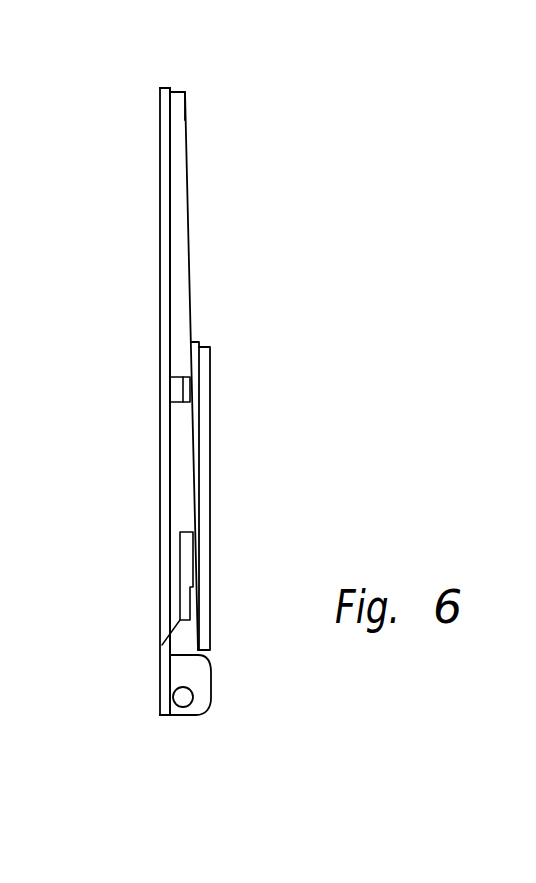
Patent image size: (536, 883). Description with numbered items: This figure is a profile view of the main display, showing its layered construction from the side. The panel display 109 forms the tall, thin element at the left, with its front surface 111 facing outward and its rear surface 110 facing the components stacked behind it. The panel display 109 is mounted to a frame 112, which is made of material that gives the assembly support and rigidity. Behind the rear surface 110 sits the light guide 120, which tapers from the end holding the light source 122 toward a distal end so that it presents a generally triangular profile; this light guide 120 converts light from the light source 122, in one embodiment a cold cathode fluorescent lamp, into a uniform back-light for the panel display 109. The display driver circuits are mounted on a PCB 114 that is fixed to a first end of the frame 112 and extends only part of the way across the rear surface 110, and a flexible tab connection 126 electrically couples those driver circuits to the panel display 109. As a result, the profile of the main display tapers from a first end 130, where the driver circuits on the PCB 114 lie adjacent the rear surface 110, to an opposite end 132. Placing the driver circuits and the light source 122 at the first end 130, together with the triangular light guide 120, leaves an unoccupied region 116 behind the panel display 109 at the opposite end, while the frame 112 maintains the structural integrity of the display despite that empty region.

The panel display 109 is at (167, 96).
The rear surface 110 is at (175, 192).
The front surface 111 is at (160, 296).
The frame 112 is at (183, 478).
The PCB 114 is at (205, 370).
The unoccupied region 116 is at (199, 279).
The light guide 120 is at (180, 113).
The light source 122 is at (184, 697).
The flexible tab connection 126 is at (205, 681).
The first end 130 is at (195, 728).
The opposite end 132 is at (149, 94).